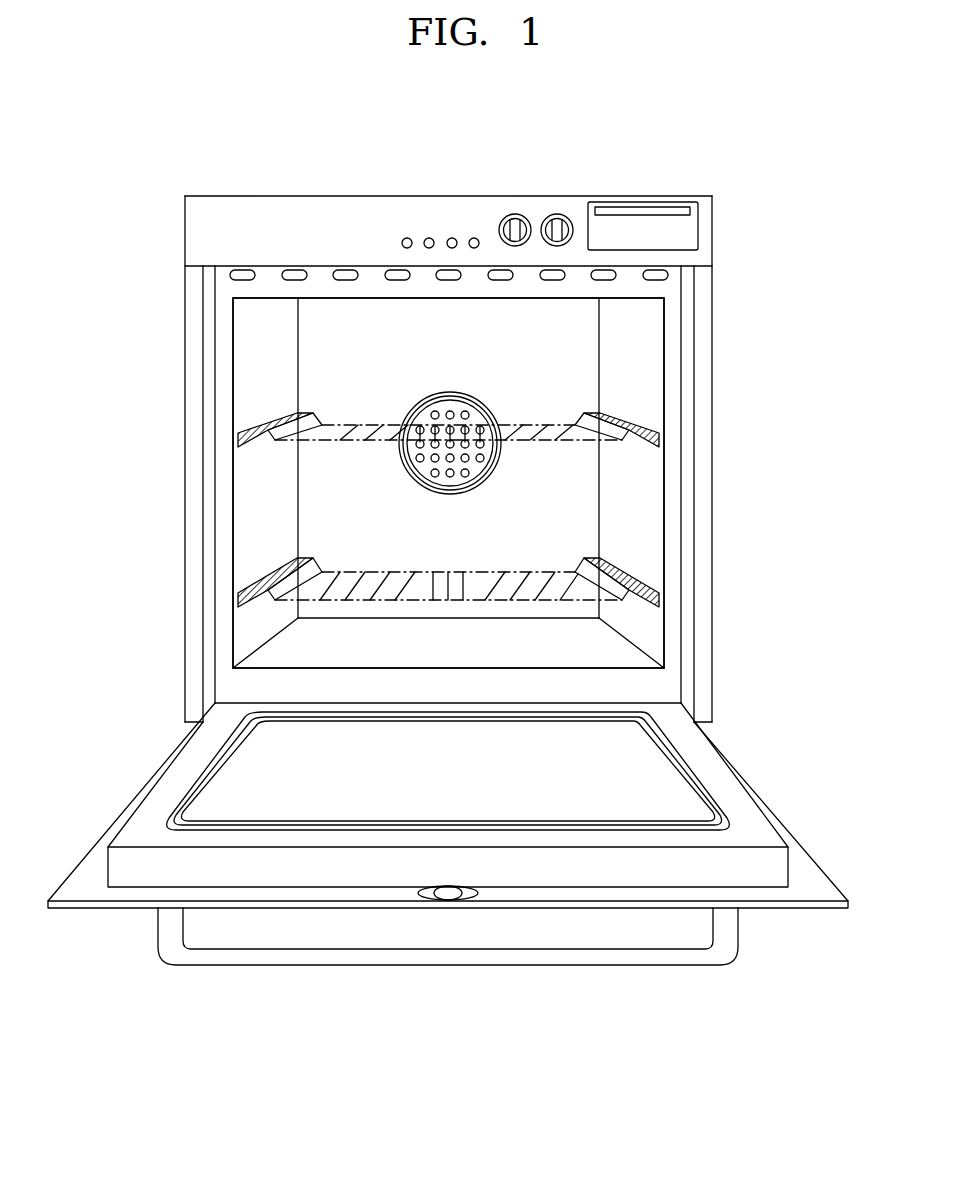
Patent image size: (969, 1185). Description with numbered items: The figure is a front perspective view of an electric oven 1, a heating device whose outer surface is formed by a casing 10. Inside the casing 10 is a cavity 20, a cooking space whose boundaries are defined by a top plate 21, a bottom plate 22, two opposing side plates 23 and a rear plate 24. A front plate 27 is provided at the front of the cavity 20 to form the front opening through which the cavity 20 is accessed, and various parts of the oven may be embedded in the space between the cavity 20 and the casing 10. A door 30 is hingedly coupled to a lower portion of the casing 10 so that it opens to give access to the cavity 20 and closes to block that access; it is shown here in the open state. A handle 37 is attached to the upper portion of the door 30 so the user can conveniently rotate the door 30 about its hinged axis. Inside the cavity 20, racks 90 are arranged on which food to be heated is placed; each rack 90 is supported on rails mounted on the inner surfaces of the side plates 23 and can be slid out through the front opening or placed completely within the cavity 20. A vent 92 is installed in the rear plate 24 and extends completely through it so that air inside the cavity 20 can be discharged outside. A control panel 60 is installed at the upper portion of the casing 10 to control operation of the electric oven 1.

The electric oven 1 is at (748, 180).
The casing 10 is at (722, 316).
The cavity 20 is at (433, 545).
The top plate 21 is at (617, 300).
The bottom plate 22 is at (625, 654).
The side plates 23 is at (652, 482).
The rear plate 24 is at (310, 372).
The front plate 27 is at (223, 310).
The door 30 is at (145, 924).
The handle 37 is at (513, 955).
The control panel 60 is at (531, 196).
The rack 90 is at (318, 446).
The vent 92 is at (449, 412).